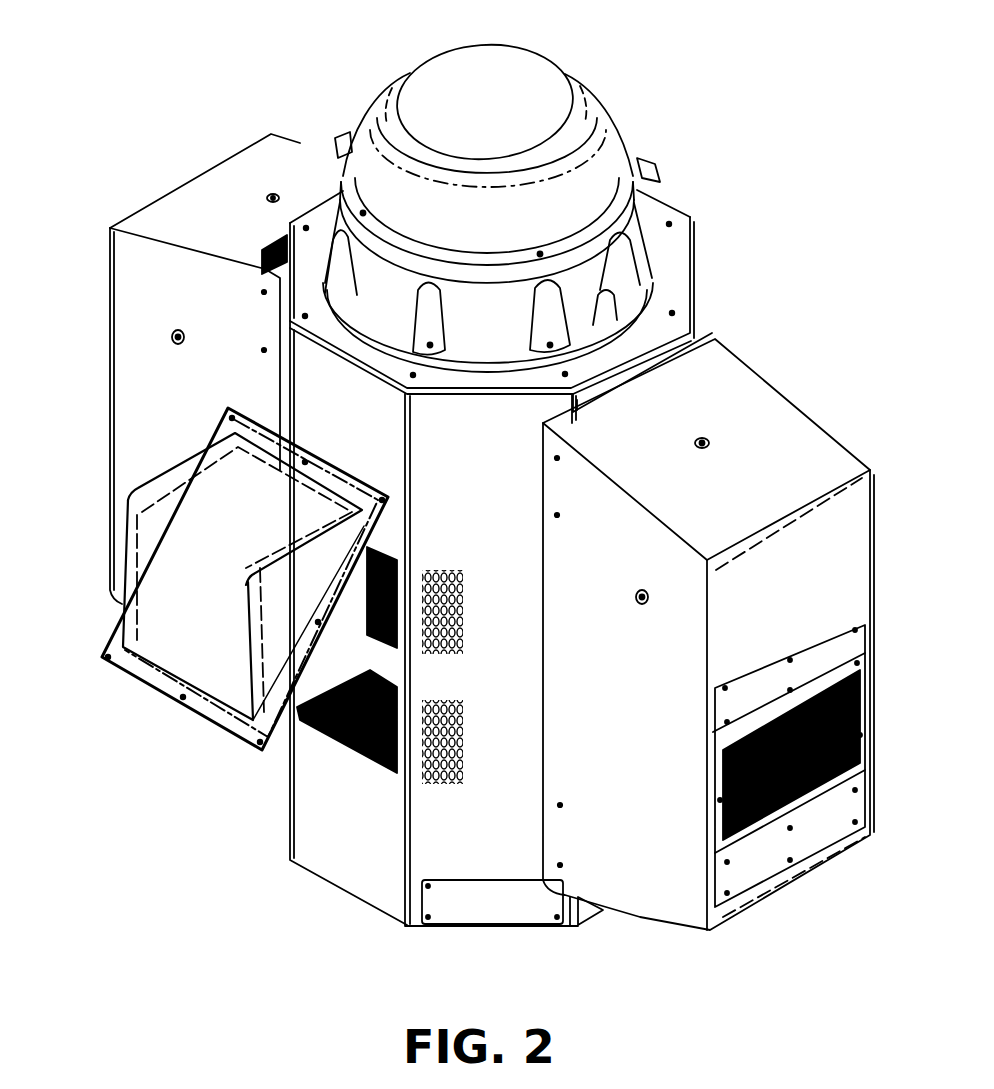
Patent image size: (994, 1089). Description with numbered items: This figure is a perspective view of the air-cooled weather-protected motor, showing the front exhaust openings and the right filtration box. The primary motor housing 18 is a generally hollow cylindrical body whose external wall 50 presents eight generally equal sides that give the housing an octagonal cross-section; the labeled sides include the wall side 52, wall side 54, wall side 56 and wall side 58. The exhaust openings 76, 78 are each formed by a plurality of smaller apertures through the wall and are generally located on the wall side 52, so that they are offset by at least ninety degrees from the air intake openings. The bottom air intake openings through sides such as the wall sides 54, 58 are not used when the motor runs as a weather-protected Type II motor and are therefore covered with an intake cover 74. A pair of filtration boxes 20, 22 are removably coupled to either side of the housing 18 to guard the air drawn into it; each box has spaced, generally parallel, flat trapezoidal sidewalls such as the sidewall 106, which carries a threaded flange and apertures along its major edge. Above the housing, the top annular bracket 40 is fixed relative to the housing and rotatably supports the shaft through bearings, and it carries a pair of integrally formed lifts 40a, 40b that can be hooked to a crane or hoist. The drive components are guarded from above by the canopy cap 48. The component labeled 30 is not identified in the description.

The primary motor housing 18 is at (328, 892).
The filtration box 20 is at (197, 197).
The filtration box 22 is at (750, 418).
The access cover 30 is at (155, 628).
The top annular bracket 40 is at (645, 253).
The lift 40a is at (340, 138).
The lift 40b is at (633, 283).
The canopy cap 48 is at (606, 137).
The external wall 50 is at (670, 215).
The wall side 52 is at (312, 836).
The wall side 54 is at (477, 857).
The wall side 56 is at (697, 325).
The wall side 58 is at (692, 298).
The intake cover 74 is at (490, 903).
The air exhaust opening 76 is at (394, 546).
The air exhaust opening 78 is at (339, 755).
The sidewall 106 is at (135, 332).